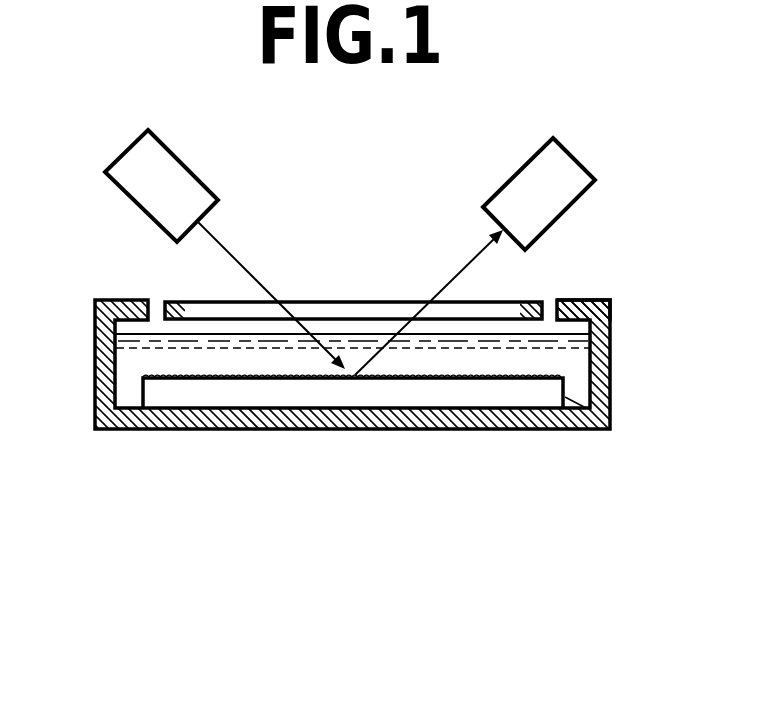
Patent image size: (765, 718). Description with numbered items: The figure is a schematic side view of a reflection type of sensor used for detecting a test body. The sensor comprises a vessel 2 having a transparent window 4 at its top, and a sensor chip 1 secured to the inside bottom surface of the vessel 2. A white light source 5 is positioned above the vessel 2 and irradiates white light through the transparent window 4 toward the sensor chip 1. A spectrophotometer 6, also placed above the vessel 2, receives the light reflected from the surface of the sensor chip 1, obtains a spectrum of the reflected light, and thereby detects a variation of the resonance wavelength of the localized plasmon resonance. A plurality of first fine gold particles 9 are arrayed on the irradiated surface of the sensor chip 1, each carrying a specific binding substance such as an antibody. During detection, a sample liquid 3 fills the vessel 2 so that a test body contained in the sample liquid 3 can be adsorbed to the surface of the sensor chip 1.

The sensor chip 1 is at (603, 431).
The vessel 2 is at (607, 300).
The sample liquid 3 is at (567, 358).
The transparent window 4 is at (348, 301).
The white light source 5 is at (185, 162).
The spectrophotometer 6 is at (580, 160).
The first fine gold particles 9 is at (143, 376).